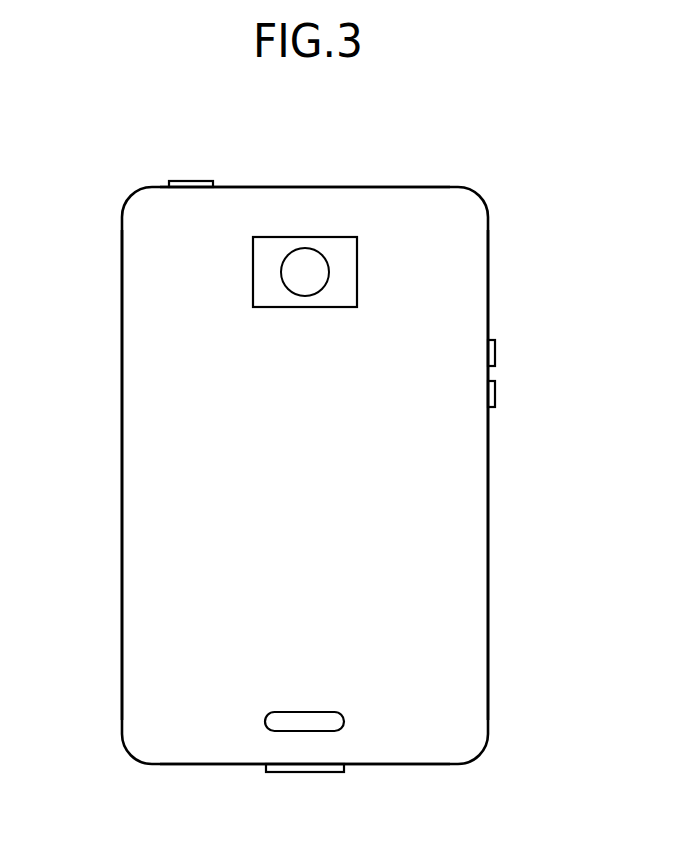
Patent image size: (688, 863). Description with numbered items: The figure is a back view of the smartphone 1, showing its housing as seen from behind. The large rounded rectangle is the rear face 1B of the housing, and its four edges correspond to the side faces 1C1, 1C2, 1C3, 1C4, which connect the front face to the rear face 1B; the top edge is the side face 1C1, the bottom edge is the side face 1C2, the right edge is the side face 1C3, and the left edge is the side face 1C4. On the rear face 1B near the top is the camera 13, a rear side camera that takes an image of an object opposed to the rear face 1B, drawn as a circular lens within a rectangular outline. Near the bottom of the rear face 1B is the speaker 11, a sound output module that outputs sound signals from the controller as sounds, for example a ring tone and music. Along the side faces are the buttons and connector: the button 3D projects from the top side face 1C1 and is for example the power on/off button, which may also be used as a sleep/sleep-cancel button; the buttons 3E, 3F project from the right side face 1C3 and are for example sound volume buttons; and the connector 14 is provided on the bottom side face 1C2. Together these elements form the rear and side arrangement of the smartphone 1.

The smartphone 1 is at (500, 164).
The rear face 1B is at (150, 434).
The side face 1C1 is at (398, 187).
The side face 1C2 is at (412, 765).
The side face 1C3 is at (489, 618).
The side face 1C4 is at (122, 562).
The button 3D is at (190, 180).
The button 3E is at (496, 353).
The button 3F is at (496, 395).
The speaker 11 is at (265, 721).
The camera 13 is at (305, 268).
The connector 14 is at (298, 773).